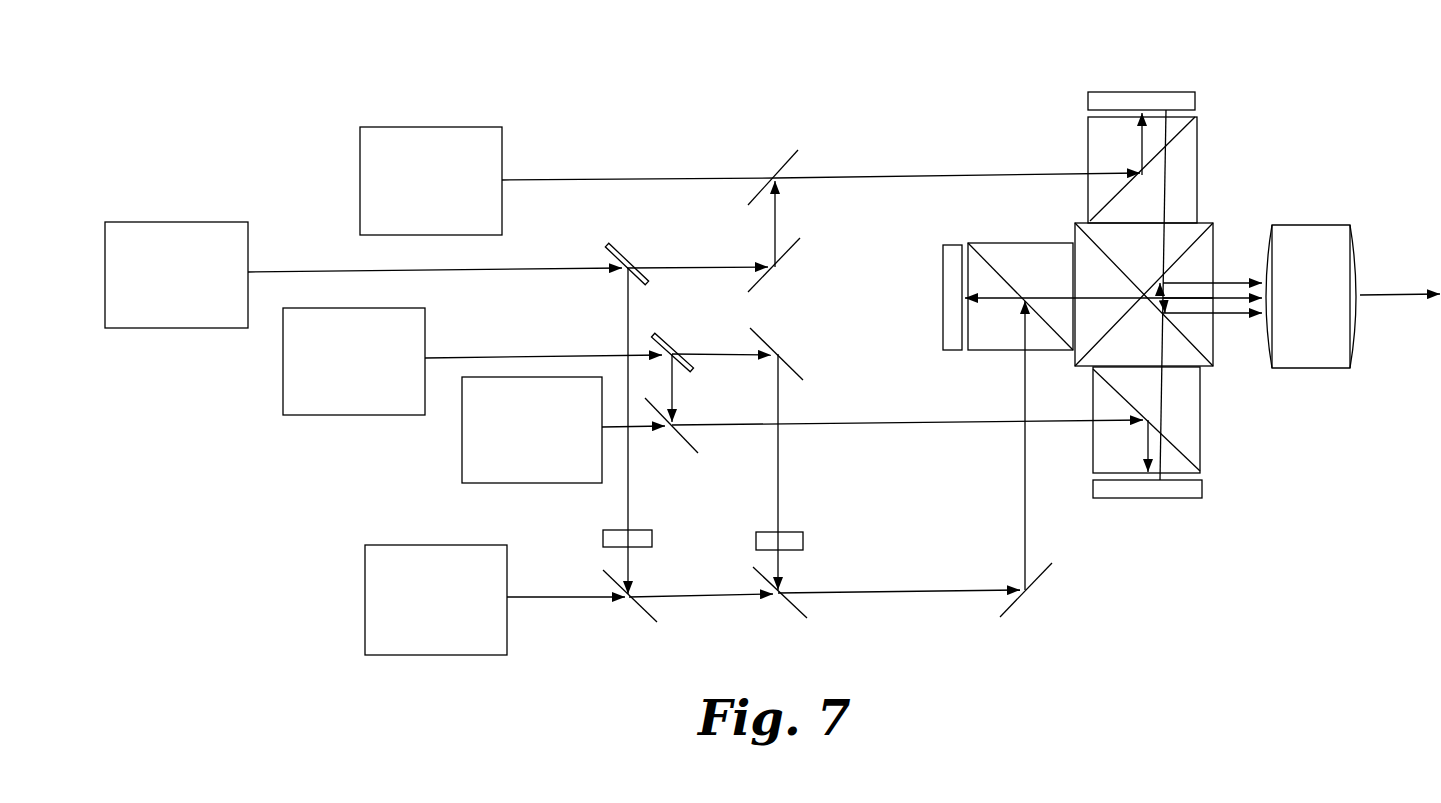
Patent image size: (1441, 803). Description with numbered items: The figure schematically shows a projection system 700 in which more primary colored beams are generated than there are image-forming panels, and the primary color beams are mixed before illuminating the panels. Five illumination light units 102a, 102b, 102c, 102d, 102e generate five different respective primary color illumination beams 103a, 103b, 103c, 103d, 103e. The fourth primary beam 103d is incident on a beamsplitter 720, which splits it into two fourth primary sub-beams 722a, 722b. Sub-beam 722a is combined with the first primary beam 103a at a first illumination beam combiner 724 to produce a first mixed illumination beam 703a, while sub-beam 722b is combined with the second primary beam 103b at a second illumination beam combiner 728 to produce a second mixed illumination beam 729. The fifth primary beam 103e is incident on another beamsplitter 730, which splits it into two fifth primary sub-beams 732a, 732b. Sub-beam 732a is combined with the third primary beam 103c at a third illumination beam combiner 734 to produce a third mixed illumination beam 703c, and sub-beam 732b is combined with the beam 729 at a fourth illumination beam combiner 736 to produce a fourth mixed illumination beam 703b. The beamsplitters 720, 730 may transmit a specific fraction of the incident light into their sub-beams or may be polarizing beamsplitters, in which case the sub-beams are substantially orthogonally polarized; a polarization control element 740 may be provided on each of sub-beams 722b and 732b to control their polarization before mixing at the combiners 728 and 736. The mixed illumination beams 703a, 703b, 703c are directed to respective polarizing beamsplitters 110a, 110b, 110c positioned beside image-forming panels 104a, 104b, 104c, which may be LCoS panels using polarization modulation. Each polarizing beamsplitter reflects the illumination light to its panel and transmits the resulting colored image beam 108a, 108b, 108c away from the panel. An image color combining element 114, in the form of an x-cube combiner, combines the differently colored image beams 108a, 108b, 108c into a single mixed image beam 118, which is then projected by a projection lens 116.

The projection system 700 is at (236, 78).
The illumination light unit 102a is at (378, 127).
The illumination light unit 102b is at (380, 545).
The illumination light unit 102c is at (462, 458).
The illumination light unit 102d is at (170, 222).
The illumination light unit 102e is at (283, 378).
The first primary beam 103a is at (595, 178).
The second primary beam 103b is at (553, 598).
The third primary beam 103c is at (652, 430).
The fourth primary beam 103d is at (310, 270).
The fifth primary beam 103e is at (465, 357).
The first mixed illumination beam 703a is at (910, 176).
The fourth mixed illumination beam 703b is at (915, 592).
The third mixed illumination beam 703c is at (935, 422).
The beamsplitter 720 is at (620, 248).
The fourth primary sub-beam 722a is at (676, 265).
The fourth primary sub-beam 722b is at (625, 302).
The first illumination beam combiner 724 is at (790, 155).
The second illumination beam combiner 728 is at (648, 617).
The second mixed illumination beam 729 is at (712, 597).
The beamsplitter 730 is at (665, 345).
The fifth primary sub-beam 732a is at (675, 395).
The fifth primary sub-beam 732b is at (722, 353).
The third illumination beam combiner 734 is at (695, 450).
The fourth illumination beam combiner 736 is at (800, 613).
The polarization control element 740 is at (603, 537).
The image-forming panel 104a is at (1145, 92).
The image-forming panel 104b is at (943, 260).
The image-forming panel 104c is at (1165, 500).
The colored image beam 108a is at (1170, 182).
The colored image beam 108b is at (990, 305).
The colored image beam 108c is at (1160, 398).
The polarizing beamsplitter 110a is at (1088, 130).
The polarizing beamsplitter 110b is at (990, 243).
The polarizing beamsplitter 110c is at (1200, 455).
The image color combining element 114 is at (1210, 225).
The projection lens 116 is at (1335, 225).
The mixed image beam 118 is at (1395, 295).